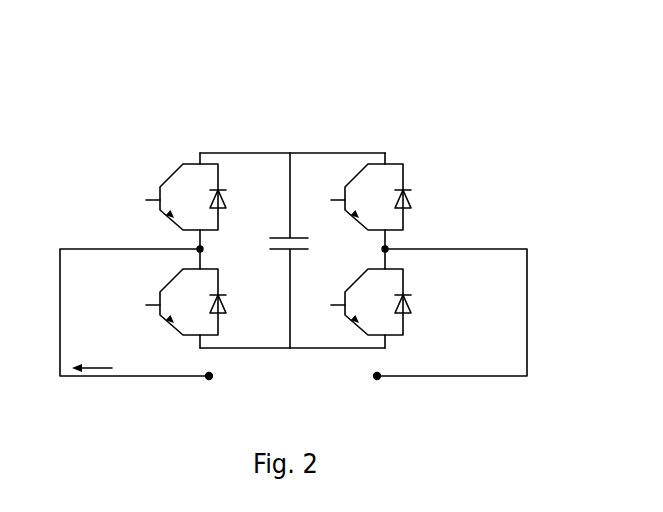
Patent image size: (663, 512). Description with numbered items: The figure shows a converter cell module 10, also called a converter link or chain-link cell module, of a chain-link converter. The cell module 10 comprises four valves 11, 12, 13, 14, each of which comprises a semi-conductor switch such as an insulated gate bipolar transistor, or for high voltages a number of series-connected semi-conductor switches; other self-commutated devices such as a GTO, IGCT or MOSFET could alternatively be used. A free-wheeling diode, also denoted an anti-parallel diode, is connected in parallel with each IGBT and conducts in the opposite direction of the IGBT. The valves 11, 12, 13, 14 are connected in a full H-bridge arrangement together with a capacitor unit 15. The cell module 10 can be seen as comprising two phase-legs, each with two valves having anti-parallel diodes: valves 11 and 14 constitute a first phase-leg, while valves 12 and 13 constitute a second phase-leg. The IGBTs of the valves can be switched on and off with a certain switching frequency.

The converter cell module 10 is at (490, 75).
The valve 11 is at (180, 182).
The valve 12 is at (394, 176).
The valve 13 is at (399, 325).
The valve 14 is at (184, 325).
The capacitor unit 15 is at (297, 238).